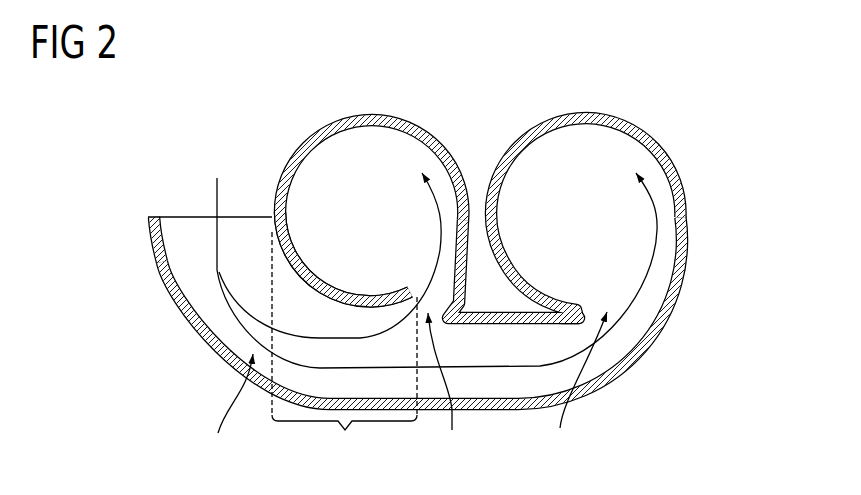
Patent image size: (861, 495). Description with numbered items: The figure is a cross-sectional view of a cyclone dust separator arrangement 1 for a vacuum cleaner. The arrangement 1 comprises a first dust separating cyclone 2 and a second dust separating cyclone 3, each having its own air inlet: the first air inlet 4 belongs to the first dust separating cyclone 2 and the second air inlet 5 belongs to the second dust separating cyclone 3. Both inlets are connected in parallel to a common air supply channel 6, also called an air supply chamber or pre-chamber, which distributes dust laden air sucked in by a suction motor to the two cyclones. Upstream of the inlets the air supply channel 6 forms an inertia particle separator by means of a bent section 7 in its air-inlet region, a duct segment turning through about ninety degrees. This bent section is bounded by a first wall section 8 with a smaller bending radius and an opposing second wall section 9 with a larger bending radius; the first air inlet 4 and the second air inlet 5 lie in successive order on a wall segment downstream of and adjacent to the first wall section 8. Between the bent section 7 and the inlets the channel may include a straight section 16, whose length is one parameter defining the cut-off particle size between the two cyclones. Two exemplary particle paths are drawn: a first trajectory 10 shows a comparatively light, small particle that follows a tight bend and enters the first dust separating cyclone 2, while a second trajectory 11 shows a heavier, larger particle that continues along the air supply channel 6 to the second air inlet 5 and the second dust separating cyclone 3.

The cyclone dust separator arrangement 1 is at (415, 220).
The first dust separating cyclone 2 is at (372, 112).
The second dust separating cyclone 3 is at (586, 112).
The first air inlet 4 is at (443, 389).
The second air inlet 5 is at (579, 389).
The air supply channel 6 is at (230, 410).
The bent section 7 is at (136, 228).
The first wall section 8 is at (290, 267).
The second wall section 9 is at (199, 352).
The first trajectory 10 is at (443, 223).
The second trajectory 11 is at (652, 223).
The straight section 16 is at (344, 349).